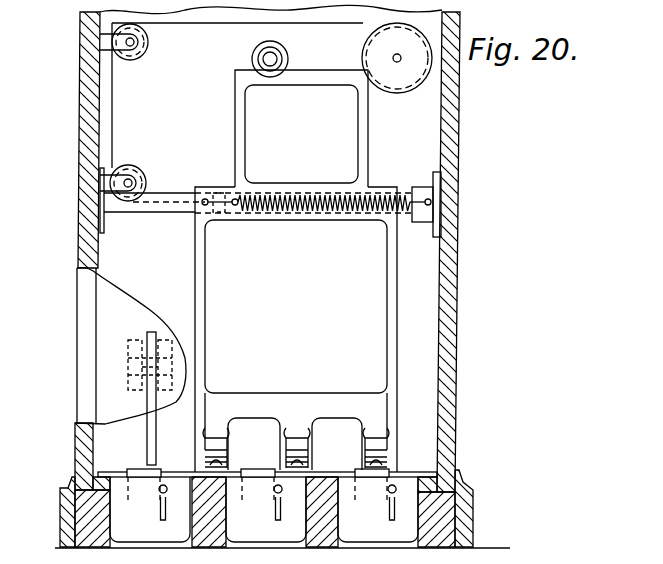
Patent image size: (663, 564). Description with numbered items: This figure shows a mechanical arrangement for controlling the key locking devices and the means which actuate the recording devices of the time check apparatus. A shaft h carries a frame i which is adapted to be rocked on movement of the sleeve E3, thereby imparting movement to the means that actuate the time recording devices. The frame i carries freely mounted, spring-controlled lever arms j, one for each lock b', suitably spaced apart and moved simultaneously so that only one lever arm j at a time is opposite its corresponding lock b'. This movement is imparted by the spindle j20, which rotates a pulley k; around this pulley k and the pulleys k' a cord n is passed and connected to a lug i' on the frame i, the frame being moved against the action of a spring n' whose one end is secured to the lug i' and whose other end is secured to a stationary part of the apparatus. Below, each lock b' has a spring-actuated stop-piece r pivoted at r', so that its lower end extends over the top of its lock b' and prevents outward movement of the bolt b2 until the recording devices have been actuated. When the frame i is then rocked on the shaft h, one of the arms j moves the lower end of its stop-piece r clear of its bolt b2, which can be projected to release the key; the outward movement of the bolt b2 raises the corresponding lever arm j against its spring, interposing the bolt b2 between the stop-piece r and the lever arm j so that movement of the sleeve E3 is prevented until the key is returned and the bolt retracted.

The pulley k' is at (137, 112).
The cord n is at (240, 105).
The sleeve E3 is at (286, 56).
The pulley k is at (397, 72).
The spindle j20 is at (401, 60).
The shaft h is at (157, 213).
The lug i' is at (220, 221).
The spring n' is at (314, 218).
The frame i is at (303, 329).
The pivot r' is at (136, 365).
The stop-piece r is at (159, 398).
The lever arm j is at (212, 453).
The bolt b2 is at (349, 469).
The lock b' is at (264, 509).